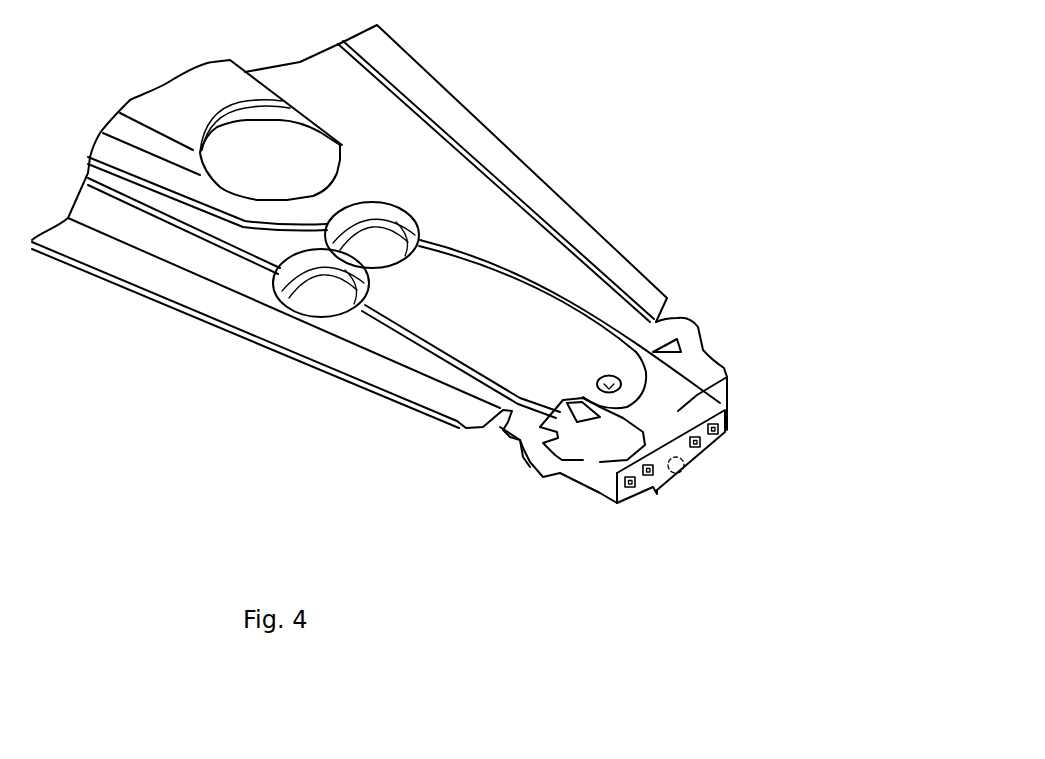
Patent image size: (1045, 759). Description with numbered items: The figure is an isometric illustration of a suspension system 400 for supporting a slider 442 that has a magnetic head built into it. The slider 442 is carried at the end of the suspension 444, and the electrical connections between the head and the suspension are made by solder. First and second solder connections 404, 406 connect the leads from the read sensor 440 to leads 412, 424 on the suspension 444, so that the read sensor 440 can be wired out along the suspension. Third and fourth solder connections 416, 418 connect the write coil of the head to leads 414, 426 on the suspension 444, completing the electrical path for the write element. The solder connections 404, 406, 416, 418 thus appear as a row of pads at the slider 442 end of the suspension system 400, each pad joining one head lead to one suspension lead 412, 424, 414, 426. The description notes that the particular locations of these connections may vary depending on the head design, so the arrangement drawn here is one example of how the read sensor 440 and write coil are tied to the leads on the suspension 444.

The suspension system 400 is at (815, 90).
The first solder connection 404 is at (626, 490).
The second solder connection 406 is at (646, 478).
The lead 412 is at (395, 328).
The lead 414 is at (583, 313).
The third solder connection 416 is at (722, 427).
The fourth solder connection 418 is at (701, 448).
The lead 424 is at (442, 348).
The lead 426 is at (498, 273).
The read sensor 440 is at (685, 477).
The slider 442 is at (567, 492).
The suspension 444 is at (526, 160).